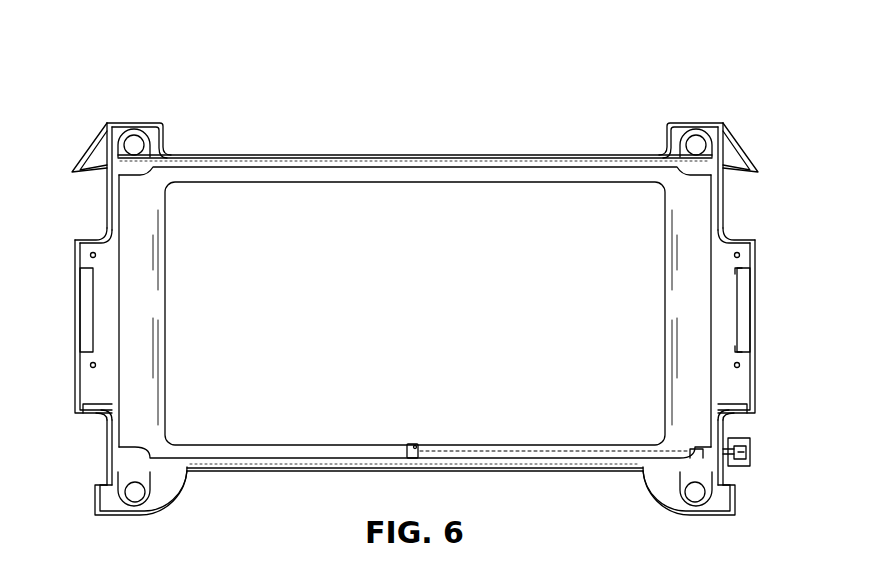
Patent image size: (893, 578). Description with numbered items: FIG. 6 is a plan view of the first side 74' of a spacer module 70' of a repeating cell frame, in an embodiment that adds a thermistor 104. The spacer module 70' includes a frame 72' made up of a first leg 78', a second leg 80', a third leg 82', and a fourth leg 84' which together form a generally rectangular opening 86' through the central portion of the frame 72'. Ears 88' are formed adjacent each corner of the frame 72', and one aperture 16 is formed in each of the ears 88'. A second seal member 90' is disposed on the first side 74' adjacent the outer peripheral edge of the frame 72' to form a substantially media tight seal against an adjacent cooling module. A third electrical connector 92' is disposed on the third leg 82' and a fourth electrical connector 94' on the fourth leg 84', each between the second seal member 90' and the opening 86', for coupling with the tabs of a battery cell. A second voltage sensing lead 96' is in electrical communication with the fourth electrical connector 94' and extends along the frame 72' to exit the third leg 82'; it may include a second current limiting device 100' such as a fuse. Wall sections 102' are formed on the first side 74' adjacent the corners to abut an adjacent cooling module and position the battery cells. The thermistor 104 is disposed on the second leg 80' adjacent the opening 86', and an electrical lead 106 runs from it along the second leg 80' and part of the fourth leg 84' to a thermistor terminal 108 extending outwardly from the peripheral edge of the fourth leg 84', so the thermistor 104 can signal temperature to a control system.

The spacer module 70' is at (443, 257).
The aperture 16 is at (137, 140).
The frame 72' is at (724, 164).
The first side 74' is at (663, 311).
The first leg 78' is at (415, 153).
The second leg 80' is at (415, 481).
The third leg 82' is at (88, 304).
The fourth leg 84' is at (756, 304).
The opening 86' is at (415, 287).
The ear 88' is at (121, 136).
The second seal member 90' is at (154, 493).
The third electrical connector 92' is at (72, 326).
The fourth electrical connector 94' is at (758, 326).
The second voltage sensing lead 96' is at (674, 491).
The second current limiting device 100' is at (656, 438).
The wall section 102' is at (425, 330).
The thermistor 104 is at (436, 436).
The electrical lead 106 is at (587, 456).
The thermistor terminal 108 is at (738, 466).